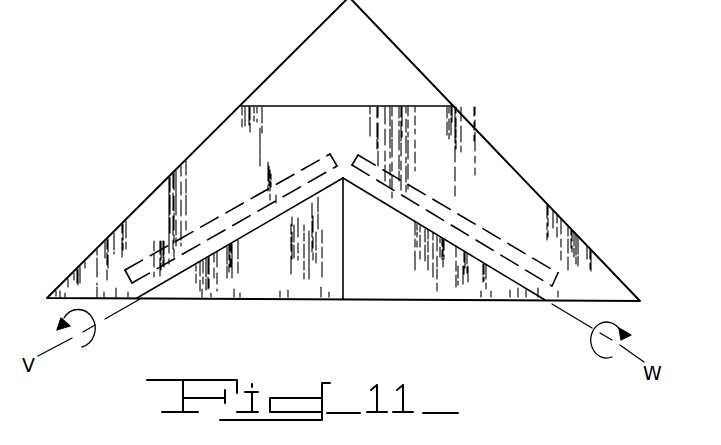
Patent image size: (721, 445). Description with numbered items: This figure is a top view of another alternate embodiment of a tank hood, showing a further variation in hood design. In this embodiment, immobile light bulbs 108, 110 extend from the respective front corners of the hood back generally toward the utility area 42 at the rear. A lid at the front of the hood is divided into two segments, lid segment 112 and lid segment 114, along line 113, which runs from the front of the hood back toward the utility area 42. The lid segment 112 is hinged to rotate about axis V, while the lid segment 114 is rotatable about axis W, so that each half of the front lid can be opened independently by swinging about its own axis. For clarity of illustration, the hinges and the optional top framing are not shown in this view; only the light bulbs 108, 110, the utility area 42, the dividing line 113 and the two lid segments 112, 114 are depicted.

The utility area 42 is at (411, 72).
The immobile light bulb 108 is at (148, 258).
The immobile light bulb 110 is at (530, 252).
The lid segment 112 is at (178, 288).
The line 113 is at (344, 282).
The lid segment 114 is at (430, 287).